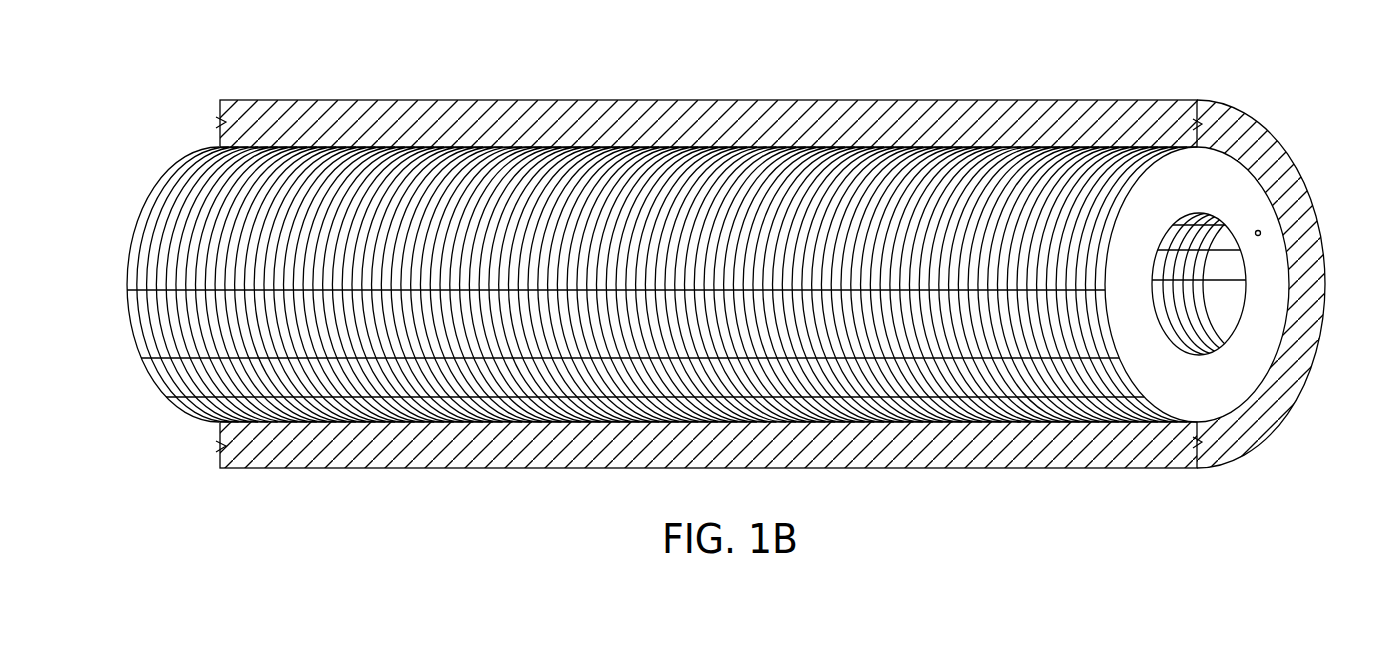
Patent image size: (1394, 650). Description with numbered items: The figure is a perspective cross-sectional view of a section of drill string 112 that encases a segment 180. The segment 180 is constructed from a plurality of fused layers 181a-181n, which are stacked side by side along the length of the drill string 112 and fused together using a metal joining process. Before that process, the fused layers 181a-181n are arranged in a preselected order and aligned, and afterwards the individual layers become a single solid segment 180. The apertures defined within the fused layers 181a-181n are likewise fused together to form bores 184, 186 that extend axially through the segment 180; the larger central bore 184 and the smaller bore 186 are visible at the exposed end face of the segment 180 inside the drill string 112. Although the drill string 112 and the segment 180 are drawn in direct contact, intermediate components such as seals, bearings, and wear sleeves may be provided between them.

The drill string 112 is at (723, 112).
The segment 180 is at (124, 214).
The fused layer 181a is at (196, 152).
The fused layer 181n is at (1170, 152).
The bore 184 is at (1208, 307).
The bore 186 is at (1261, 235).